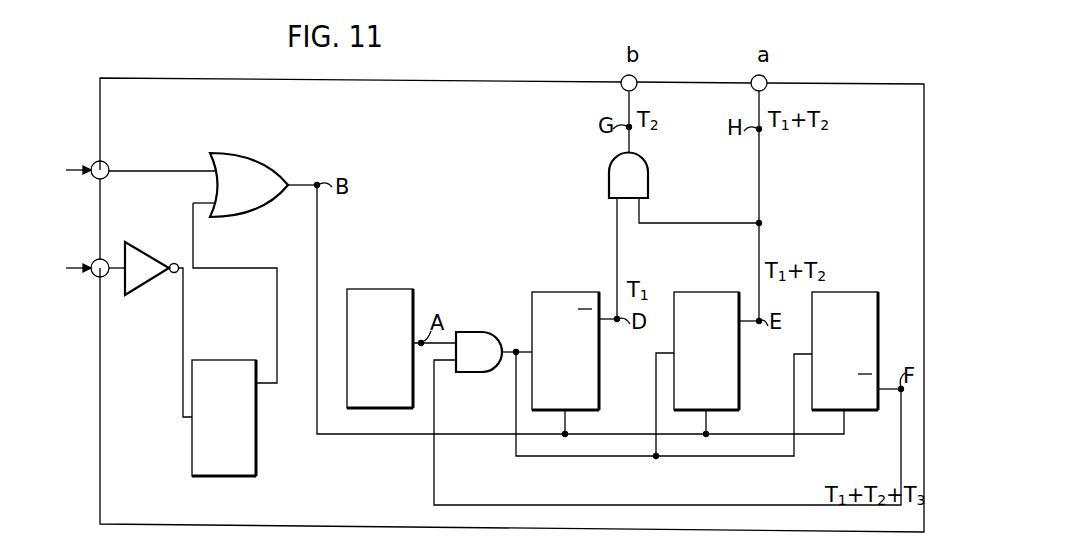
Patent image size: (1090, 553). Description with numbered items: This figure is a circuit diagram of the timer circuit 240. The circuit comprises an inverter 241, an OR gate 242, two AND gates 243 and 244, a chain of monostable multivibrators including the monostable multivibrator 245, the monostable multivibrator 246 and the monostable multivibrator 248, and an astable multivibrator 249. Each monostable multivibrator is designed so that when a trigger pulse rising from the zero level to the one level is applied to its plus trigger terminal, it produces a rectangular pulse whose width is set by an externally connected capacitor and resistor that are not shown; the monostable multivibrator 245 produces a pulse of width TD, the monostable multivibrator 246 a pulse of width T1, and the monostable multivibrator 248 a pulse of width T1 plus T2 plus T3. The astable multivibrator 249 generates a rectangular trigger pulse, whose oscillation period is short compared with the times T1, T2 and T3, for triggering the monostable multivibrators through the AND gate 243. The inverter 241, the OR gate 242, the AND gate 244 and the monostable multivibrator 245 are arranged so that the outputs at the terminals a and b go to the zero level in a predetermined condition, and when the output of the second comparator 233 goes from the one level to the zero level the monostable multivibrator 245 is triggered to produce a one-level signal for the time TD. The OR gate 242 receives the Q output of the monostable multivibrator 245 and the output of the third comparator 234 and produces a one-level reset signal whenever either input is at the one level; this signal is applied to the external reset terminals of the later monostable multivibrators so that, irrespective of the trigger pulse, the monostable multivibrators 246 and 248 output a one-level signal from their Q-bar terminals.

The timer circuit 240 is at (494, 79).
The second comparator 233 is at (71, 247).
The third comparator 234 is at (69, 146).
The inverter 241 is at (153, 257).
The OR gate 242 is at (283, 169).
The AND gate 243 is at (483, 332).
The AND gate 244 is at (649, 174).
The monostable multivibrator 245 is at (257, 467).
The monostable multivibrator 246 is at (600, 385).
The monostable multivibrator 248 is at (740, 362).
The astable multivibrator 249 is at (414, 305).